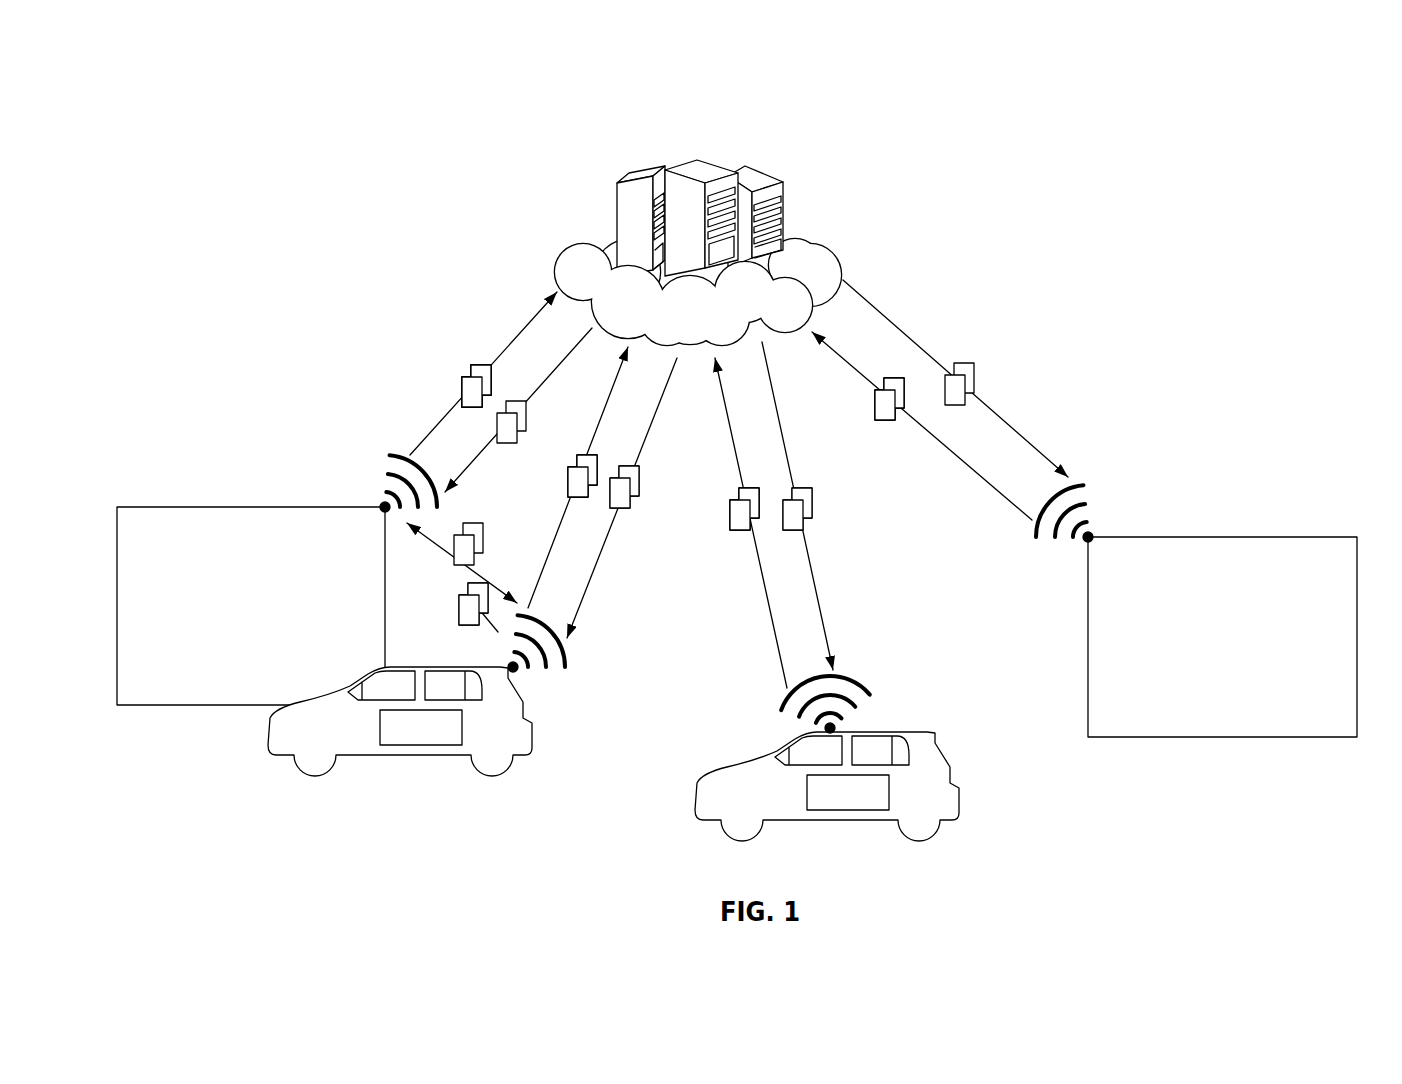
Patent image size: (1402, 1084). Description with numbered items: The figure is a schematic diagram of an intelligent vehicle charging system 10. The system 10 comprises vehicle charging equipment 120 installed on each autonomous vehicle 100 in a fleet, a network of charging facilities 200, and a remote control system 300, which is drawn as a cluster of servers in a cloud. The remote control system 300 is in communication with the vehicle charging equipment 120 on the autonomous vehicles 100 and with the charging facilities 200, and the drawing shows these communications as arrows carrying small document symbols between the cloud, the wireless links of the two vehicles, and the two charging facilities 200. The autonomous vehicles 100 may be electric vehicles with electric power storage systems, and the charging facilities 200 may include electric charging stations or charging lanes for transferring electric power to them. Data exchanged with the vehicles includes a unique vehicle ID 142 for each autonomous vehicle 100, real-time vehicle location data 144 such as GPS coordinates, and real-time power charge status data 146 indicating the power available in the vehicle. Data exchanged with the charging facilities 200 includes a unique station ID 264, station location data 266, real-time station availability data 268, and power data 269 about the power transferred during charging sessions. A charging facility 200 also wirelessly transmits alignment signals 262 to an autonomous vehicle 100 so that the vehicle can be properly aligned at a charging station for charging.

The intelligent vehicle charging system 10 is at (870, 110).
The autonomous vehicle 100 is at (318, 697).
The vehicle charging equipment 120 is at (440, 741).
The vehicle ID 142 is at (526, 416).
The vehicle location data 144 is at (663, 492).
The power charge status data 146 is at (609, 540).
The charging facility 200 is at (166, 507).
The alignment signal 262 is at (474, 524).
The station ID 264 is at (893, 453).
The station location data 266 is at (683, 447).
The station availability data 268 is at (683, 392).
The power data 269 is at (476, 386).
The remote control system 300 is at (704, 164).